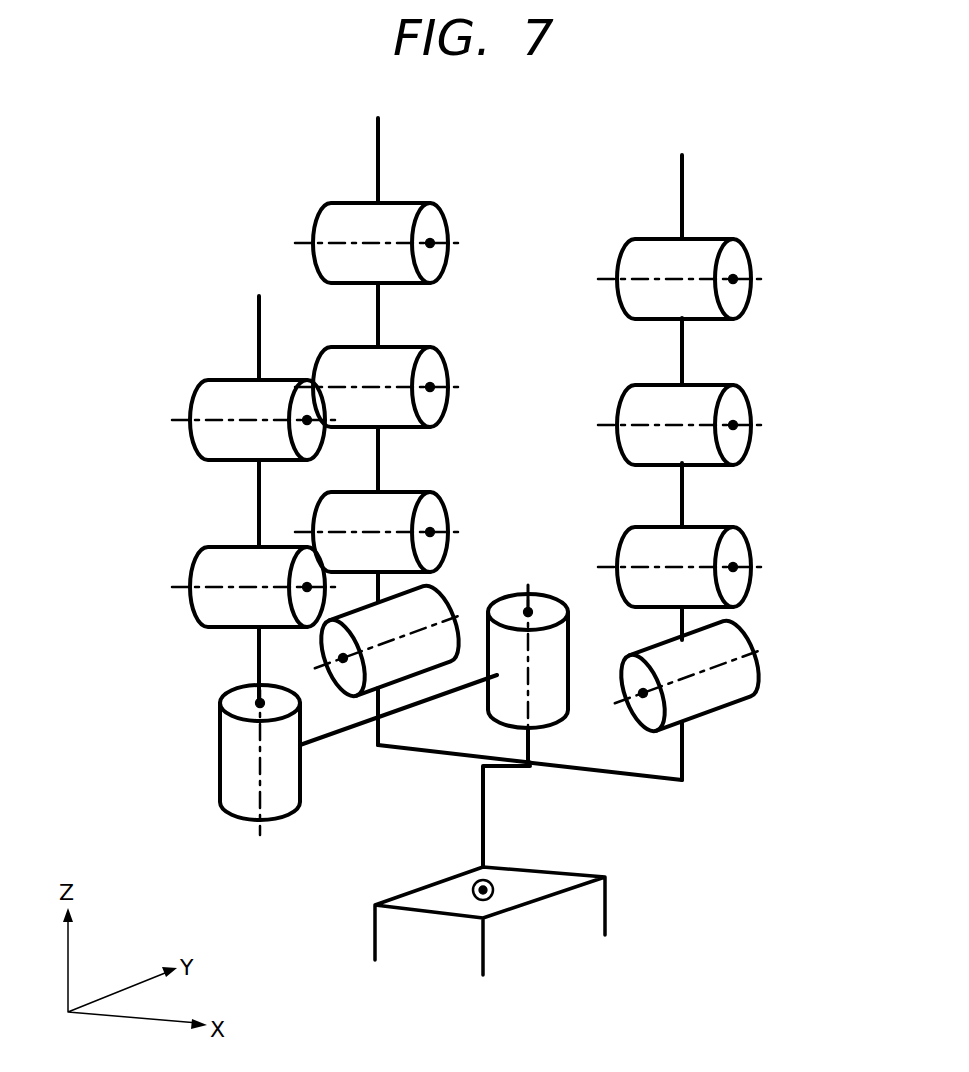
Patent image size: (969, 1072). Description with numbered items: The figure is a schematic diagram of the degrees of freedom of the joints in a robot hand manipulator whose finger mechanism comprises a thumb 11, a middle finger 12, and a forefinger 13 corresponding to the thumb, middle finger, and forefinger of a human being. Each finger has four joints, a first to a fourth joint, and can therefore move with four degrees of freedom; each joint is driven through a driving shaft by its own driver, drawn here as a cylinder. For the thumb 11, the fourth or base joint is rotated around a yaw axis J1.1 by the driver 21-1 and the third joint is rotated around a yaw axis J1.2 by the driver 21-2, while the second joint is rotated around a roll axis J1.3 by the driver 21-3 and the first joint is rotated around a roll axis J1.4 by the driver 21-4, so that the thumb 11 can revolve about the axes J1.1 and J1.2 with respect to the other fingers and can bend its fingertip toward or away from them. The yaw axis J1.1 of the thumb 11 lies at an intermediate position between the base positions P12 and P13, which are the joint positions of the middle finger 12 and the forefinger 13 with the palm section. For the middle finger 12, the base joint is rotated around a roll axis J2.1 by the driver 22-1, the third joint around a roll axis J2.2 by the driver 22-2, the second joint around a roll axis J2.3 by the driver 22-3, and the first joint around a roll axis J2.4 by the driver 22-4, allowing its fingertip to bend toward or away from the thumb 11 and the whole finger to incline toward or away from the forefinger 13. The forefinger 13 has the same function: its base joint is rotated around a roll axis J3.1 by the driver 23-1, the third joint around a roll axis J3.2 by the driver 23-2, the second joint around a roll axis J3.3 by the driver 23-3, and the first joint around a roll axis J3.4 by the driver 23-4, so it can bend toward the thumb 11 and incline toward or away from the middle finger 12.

The thumb 11 is at (258, 307).
The middle finger 12 is at (376, 131).
The forefinger 13 is at (680, 172).
The driver 21-1 is at (572, 638).
The driver 21-2 is at (220, 774).
The driver 21-3 is at (205, 547).
The driver 21-4 is at (205, 380).
The driver 22-1 is at (413, 663).
The driver 22-2 is at (398, 492).
The driver 22-3 is at (400, 347).
The driver 22-4 is at (400, 202).
The driver 23-1 is at (723, 703).
The driver 23-2 is at (712, 527).
The driver 23-3 is at (710, 385).
The driver 23-4 is at (707, 240).
The yaw axis J1.1 is at (528, 585).
The yaw axis J1.2 is at (259, 828).
The roll axis J1.3 is at (176, 587).
The roll axis J1.4 is at (176, 420).
The roll axis J2.1 is at (458, 622).
The roll axis J2.2 is at (452, 532).
The roll axis J2.3 is at (452, 387).
The roll axis J2.4 is at (452, 243).
The roll axis J3.1 is at (767, 650).
The roll axis J3.2 is at (758, 567).
The roll axis J3.3 is at (758, 425).
The roll axis J3.4 is at (758, 279).
The base position P12 is at (378, 748).
The base position P13 is at (676, 784).